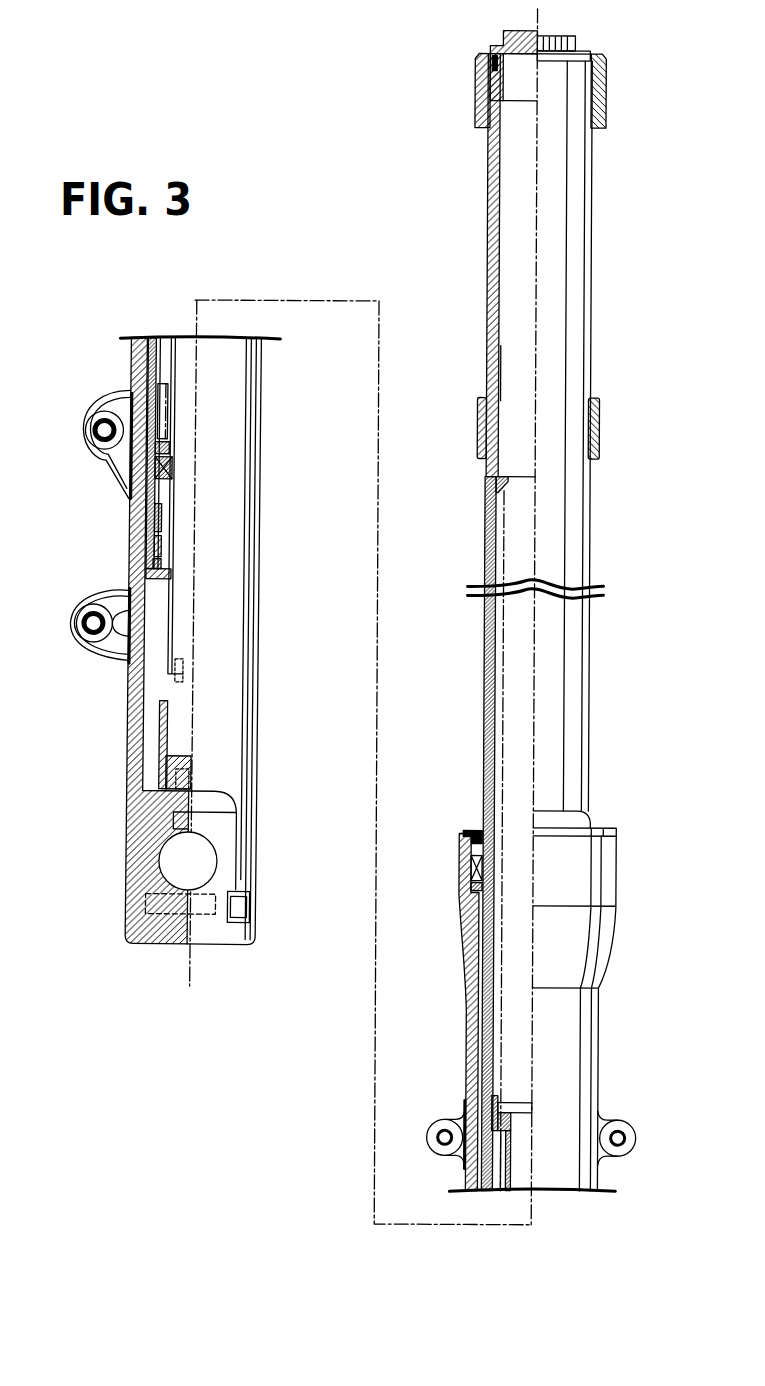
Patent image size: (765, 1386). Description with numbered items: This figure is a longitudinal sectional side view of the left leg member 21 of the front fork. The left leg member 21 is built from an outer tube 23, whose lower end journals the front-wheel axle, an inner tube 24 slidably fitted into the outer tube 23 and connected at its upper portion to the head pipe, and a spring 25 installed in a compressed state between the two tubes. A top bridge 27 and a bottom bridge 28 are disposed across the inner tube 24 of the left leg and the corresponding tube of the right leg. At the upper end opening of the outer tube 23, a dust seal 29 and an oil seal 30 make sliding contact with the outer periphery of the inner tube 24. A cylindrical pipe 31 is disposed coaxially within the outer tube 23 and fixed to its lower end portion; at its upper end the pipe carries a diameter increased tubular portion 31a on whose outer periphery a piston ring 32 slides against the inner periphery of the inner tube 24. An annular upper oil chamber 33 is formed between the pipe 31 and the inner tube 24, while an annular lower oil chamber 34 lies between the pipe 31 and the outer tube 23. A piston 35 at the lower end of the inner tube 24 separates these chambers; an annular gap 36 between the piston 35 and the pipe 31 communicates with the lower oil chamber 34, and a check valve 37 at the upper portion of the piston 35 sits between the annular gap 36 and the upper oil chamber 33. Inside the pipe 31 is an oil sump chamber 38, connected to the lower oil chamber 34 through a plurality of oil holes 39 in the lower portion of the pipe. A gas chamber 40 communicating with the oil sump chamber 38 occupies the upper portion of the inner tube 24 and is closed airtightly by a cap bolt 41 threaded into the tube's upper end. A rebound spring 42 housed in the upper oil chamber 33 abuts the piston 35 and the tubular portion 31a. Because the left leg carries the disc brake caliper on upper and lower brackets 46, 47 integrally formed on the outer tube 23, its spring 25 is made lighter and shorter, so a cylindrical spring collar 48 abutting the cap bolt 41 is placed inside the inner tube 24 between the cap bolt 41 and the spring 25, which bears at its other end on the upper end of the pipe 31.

The left leg member 21 is at (613, 436).
The outer tube 23 is at (605, 1050).
The inner tube 24 is at (572, 311).
The spring 25 is at (487, 500).
The top bridge 27 is at (472, 85).
The bottom bridge 28 is at (477, 425).
The dust seal 29 is at (482, 829).
The oil seal 30 is at (470, 865).
The pipe 31 is at (128, 685).
The diameter increased tubular portion 31a is at (520, 1112).
The piston ring 32 is at (467, 1112).
The upper oil chamber 33 is at (160, 363).
The lower oil chamber 34 is at (155, 732).
The piston 35 is at (152, 533).
The annular gap 36 is at (165, 520).
The check valve 37 is at (165, 473).
The oil sump chamber 38 is at (182, 742).
The oil holes 39 is at (183, 683).
The gas chamber 40 is at (515, 224).
The cap bolt 41 is at (500, 41).
The rebound spring 42 is at (133, 380).
The upper bracket 46 is at (80, 432).
The lower bracket 47 is at (75, 625).
The spring collar 48 is at (500, 362).